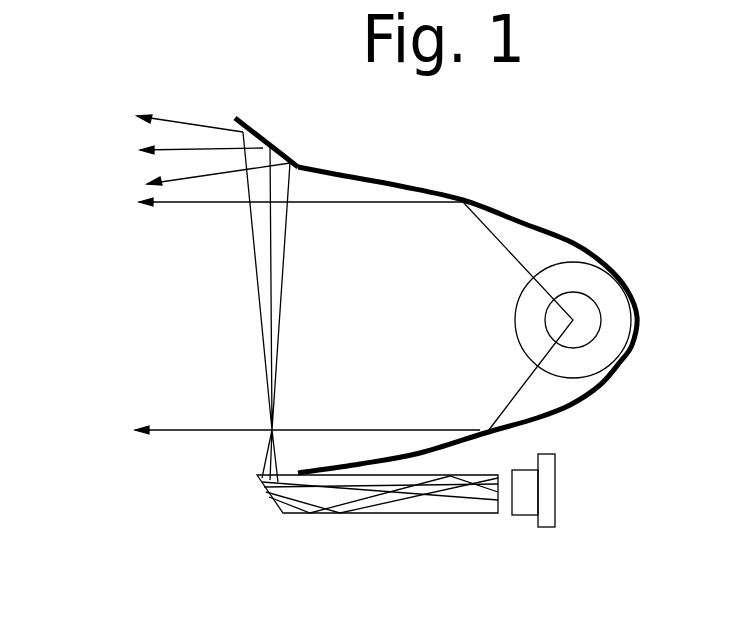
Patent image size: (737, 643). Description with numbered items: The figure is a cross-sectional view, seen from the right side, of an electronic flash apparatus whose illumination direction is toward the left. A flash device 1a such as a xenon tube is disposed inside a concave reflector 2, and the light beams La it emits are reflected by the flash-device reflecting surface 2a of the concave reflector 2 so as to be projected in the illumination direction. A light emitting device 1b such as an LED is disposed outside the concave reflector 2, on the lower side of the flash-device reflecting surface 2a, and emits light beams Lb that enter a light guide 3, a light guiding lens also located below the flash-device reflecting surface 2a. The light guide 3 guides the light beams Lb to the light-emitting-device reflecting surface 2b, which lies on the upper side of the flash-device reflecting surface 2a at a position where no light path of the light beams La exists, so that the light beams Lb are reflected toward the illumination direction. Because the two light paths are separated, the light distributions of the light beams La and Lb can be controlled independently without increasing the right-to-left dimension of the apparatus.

The flash device 1a is at (600, 330).
The light emitting device 1b is at (540, 490).
The concave reflector 2 is at (535, 202).
The flash-device reflecting surface 2a is at (522, 222).
The light-emitting-device reflecting surface 2b is at (263, 144).
The light guide 3 is at (390, 525).
The light beams La is at (305, 316).
The light beams Lb is at (195, 272).